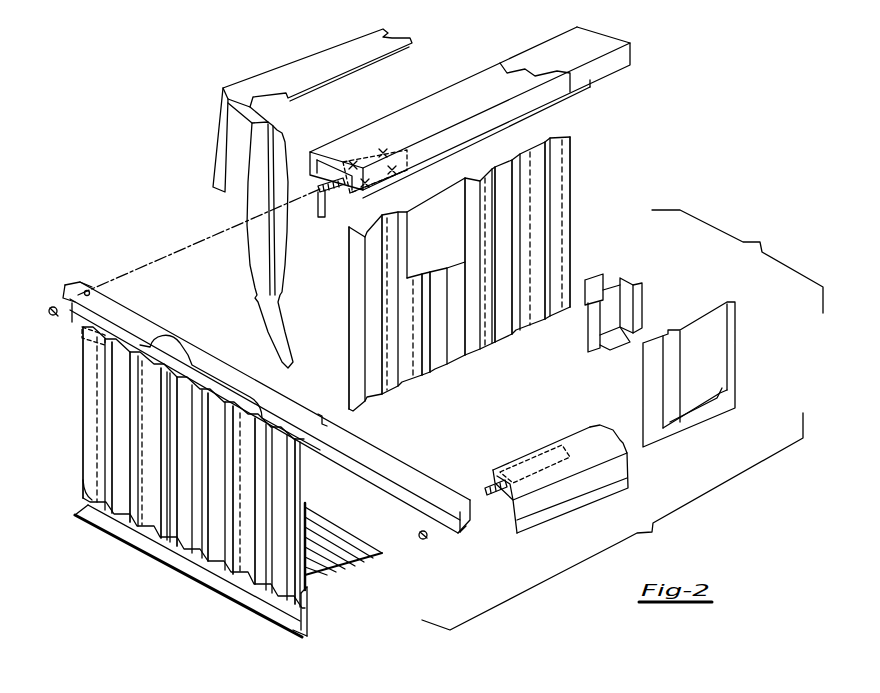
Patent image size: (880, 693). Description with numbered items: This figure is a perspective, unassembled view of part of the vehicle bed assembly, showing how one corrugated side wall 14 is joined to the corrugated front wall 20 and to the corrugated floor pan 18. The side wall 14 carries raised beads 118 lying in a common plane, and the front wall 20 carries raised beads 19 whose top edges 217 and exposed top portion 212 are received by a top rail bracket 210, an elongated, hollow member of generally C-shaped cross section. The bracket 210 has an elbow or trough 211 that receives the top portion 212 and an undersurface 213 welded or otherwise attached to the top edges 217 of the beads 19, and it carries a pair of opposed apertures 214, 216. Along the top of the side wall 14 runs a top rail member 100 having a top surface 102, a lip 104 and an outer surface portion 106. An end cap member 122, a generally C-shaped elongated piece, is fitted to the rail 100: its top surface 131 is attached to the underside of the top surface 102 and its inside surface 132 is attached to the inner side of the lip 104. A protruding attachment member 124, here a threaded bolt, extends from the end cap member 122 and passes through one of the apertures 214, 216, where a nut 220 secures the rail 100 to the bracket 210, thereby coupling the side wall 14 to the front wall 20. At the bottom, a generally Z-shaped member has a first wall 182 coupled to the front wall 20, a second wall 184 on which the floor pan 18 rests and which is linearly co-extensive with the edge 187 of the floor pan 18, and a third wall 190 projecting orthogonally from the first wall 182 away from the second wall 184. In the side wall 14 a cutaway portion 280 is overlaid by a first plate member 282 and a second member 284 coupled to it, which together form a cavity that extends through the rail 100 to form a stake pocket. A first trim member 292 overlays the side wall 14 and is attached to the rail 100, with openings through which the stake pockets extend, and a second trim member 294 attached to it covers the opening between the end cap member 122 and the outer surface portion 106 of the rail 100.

The side wall 14 is at (570, 257).
The floor pan 18 is at (347, 517).
The raised beads 19 is at (90, 438).
The front wall 20 is at (103, 487).
The top rail member 100 is at (550, 47).
The top surface 102 is at (487, 106).
The lip 104 is at (620, 62).
The outer surface portion 106 is at (382, 117).
The raised beads 118 is at (538, 317).
The end cap member 122 is at (310, 212).
The protruding attachment member 124 is at (323, 213).
The top surface 131 is at (390, 140).
The inside surface 132 is at (380, 195).
The first wall 182 is at (167, 545).
The second wall 184 is at (320, 590).
The edge 187 is at (323, 572).
The third wall 190 is at (203, 590).
The top rail bracket 210 is at (397, 453).
The elbow or trough 211 is at (479, 537).
The exposed top portion 212 is at (153, 365).
The undersurface 213 is at (467, 537).
The aperture 214 is at (468, 518).
The aperture 216 is at (88, 292).
The top edges 217 is at (190, 372).
The nut 220 is at (49, 314).
The cutaway portion 280 is at (452, 240).
The first plate member 282 is at (721, 368).
The second member 284 is at (645, 302).
The first trim member 292 is at (297, 67).
The second trim member 294 is at (255, 240).